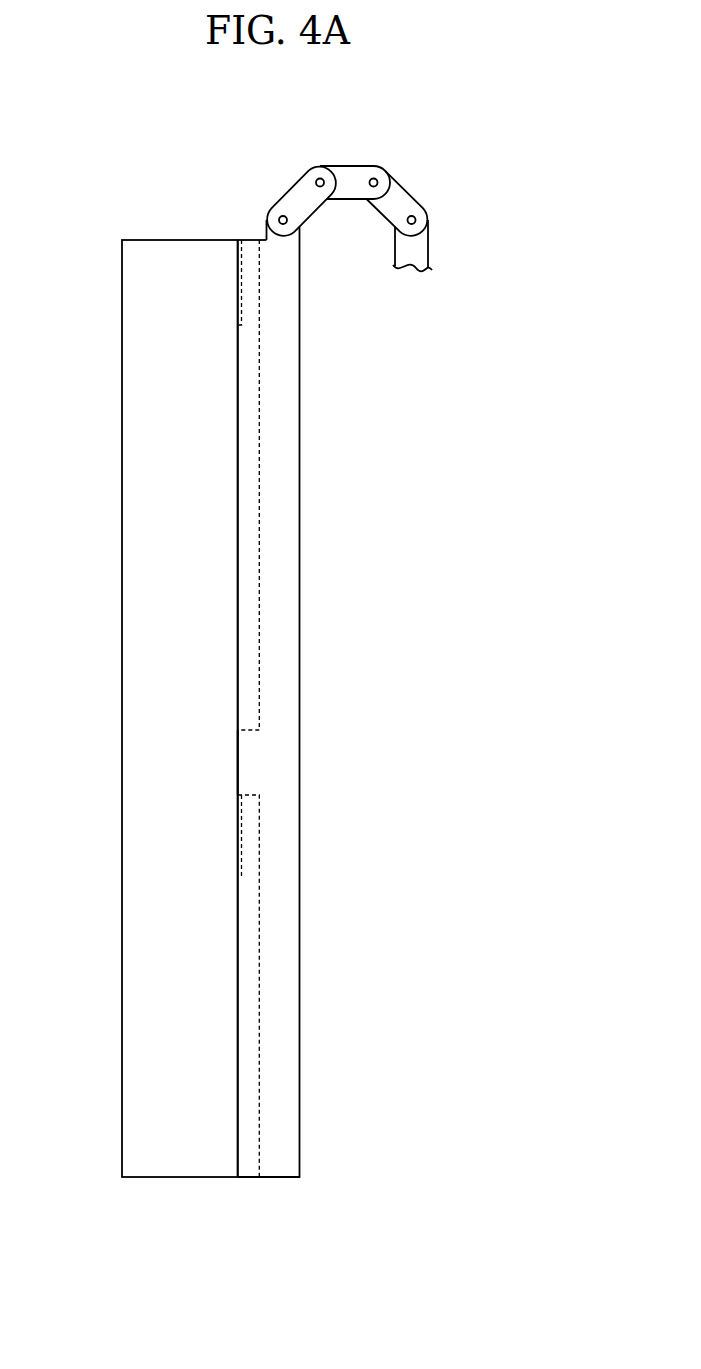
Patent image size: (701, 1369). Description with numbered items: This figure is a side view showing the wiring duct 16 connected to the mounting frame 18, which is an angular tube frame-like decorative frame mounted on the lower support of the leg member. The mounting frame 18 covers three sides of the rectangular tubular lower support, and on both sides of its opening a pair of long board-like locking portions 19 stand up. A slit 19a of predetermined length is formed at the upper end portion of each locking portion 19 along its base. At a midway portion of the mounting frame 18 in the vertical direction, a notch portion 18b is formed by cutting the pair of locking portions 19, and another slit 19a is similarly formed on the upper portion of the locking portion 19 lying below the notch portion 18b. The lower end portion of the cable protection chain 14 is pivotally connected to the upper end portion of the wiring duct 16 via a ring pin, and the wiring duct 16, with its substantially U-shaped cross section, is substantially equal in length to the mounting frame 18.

The cable protection chain 14 is at (354, 166).
The wiring duct 16 is at (300, 425).
The mounting frame 18 is at (122, 373).
The notch portion 18b is at (250, 765).
The locking portion 19 is at (259, 537).
The slit 19a is at (242, 275).